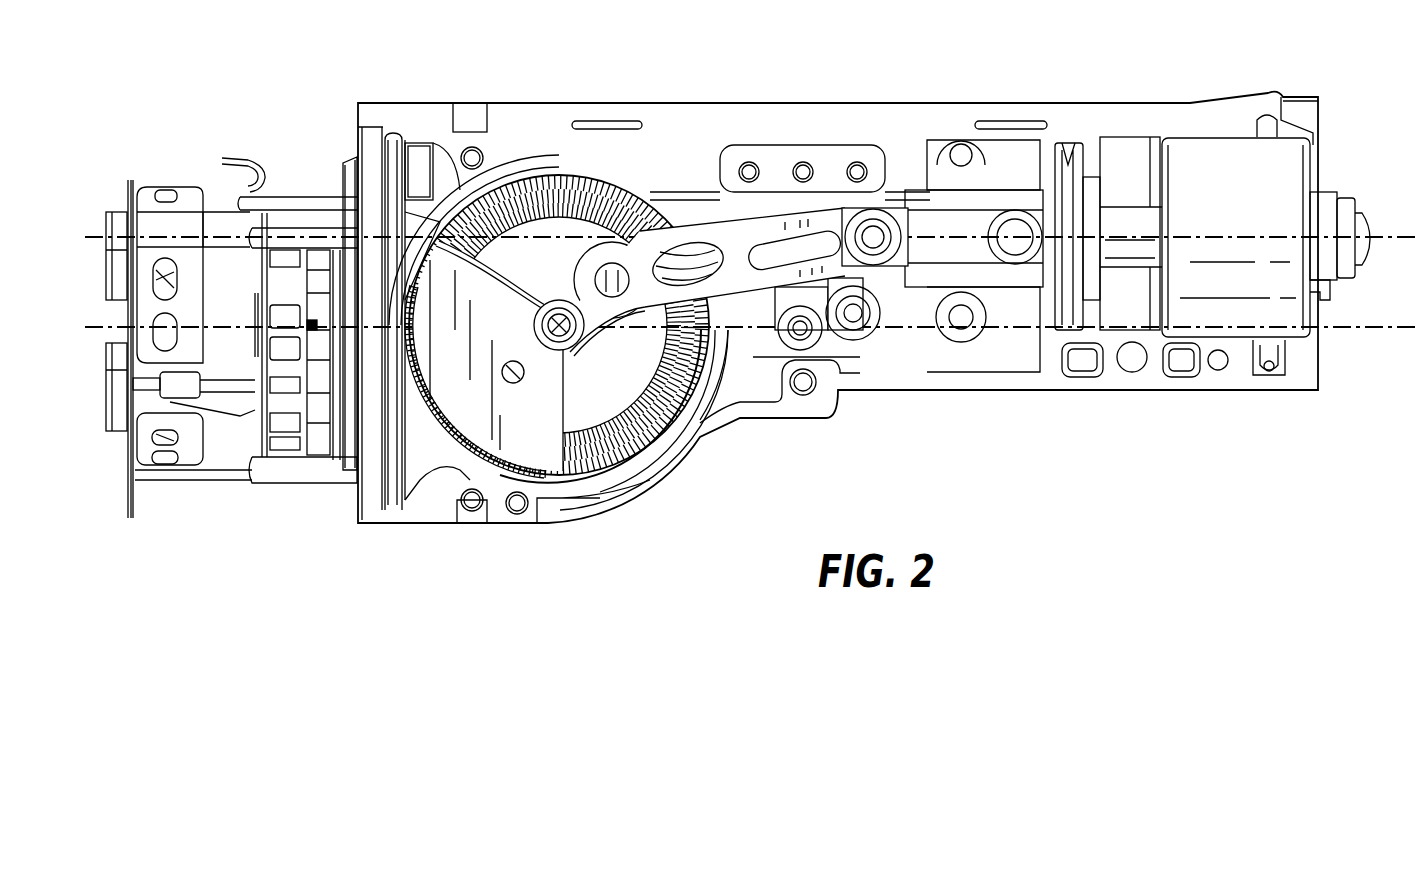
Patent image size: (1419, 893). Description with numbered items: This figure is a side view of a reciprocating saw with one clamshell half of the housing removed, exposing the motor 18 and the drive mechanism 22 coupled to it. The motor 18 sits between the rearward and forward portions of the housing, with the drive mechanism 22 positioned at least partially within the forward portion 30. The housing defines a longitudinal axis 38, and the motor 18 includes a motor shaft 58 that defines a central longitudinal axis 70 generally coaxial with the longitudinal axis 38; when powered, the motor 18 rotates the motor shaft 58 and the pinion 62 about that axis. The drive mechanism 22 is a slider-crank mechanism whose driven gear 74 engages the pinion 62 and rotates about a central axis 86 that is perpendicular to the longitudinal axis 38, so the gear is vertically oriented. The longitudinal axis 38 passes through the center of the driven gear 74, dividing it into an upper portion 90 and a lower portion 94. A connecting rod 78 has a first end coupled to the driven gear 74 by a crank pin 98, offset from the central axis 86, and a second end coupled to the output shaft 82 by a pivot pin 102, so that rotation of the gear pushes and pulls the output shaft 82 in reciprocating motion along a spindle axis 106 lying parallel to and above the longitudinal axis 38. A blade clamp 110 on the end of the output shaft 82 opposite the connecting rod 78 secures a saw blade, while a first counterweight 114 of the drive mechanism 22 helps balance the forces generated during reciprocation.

The motor 18 is at (190, 268).
The drive mechanism 22 is at (731, 484).
The forward portion 30 is at (1160, 102).
The longitudinal axis 38 is at (1372, 333).
The motor shaft 58 is at (340, 345).
The pinion 62 is at (430, 420).
The central longitudinal axis 70 is at (220, 320).
The driven gear 74 is at (655, 420).
The connecting rod 78 is at (770, 230).
The output shaft 82 is at (1125, 258).
The central axis 86 is at (555, 302).
The upper portion 90 is at (532, 182).
The lower portion 94 is at (600, 460).
The crank pin 98 is at (615, 275).
The pivot pin 102 is at (875, 225).
The spindle axis 106 is at (1372, 240).
The blade clamp 110 is at (1345, 205).
The first counterweight 114 is at (535, 445).